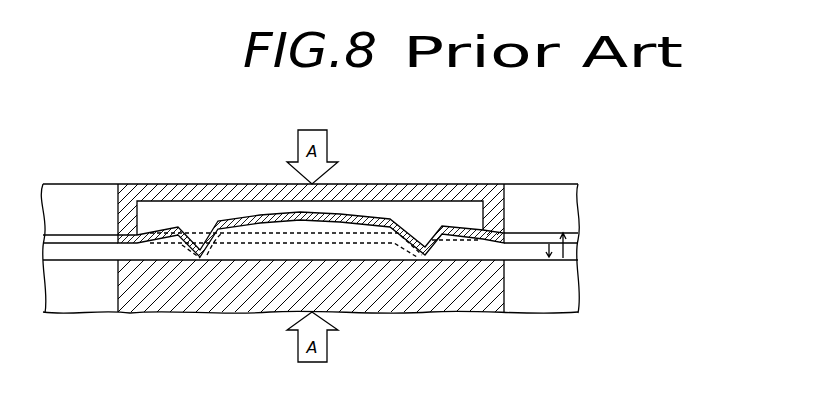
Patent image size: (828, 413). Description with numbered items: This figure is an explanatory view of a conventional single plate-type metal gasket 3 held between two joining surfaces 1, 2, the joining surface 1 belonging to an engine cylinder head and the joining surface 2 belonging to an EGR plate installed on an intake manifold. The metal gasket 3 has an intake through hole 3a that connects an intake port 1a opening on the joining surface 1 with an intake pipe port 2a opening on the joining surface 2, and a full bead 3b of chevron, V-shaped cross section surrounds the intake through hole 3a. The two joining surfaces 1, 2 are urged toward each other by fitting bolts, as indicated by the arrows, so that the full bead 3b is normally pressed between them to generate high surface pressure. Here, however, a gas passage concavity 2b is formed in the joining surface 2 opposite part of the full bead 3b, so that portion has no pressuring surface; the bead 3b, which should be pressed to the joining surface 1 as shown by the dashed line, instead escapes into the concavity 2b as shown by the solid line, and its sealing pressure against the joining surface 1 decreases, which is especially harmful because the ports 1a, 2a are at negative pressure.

The joining surface 1 is at (552, 233).
The intake port 1a is at (118, 280).
The joining surface 2 is at (565, 261).
The intake pipe port 2a is at (117, 237).
The gas passage concavity 2b is at (138, 228).
The metal gasket 3 is at (336, 232).
The intake through hole 3a is at (88, 241).
The full bead 3b is at (203, 258).